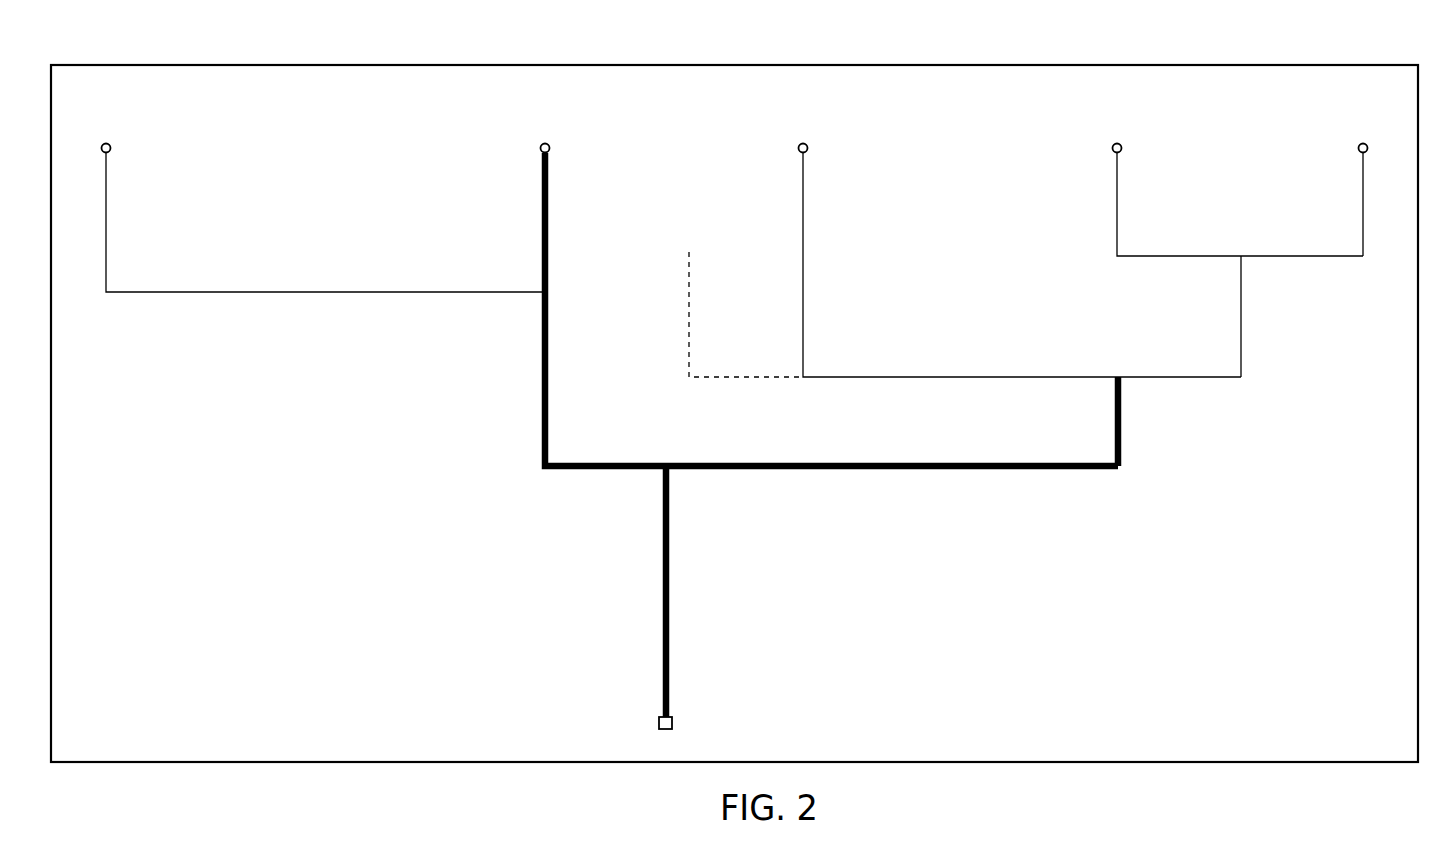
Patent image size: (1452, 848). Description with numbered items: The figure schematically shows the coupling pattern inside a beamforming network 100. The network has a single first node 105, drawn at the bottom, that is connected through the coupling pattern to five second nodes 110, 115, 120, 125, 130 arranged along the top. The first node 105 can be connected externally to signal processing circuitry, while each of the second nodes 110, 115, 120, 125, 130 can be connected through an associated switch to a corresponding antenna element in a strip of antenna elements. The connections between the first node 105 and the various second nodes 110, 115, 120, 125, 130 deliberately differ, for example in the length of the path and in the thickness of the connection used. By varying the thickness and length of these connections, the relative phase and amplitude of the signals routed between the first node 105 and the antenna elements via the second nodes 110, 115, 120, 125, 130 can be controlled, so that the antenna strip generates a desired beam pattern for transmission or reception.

The beamforming network 100 is at (872, 65).
The first node 105 is at (673, 722).
The second node 110 is at (108, 143).
The second node 115 is at (545, 143).
The second node 120 is at (803, 143).
The second node 125 is at (1117, 143).
The second node 130 is at (1363, 143).